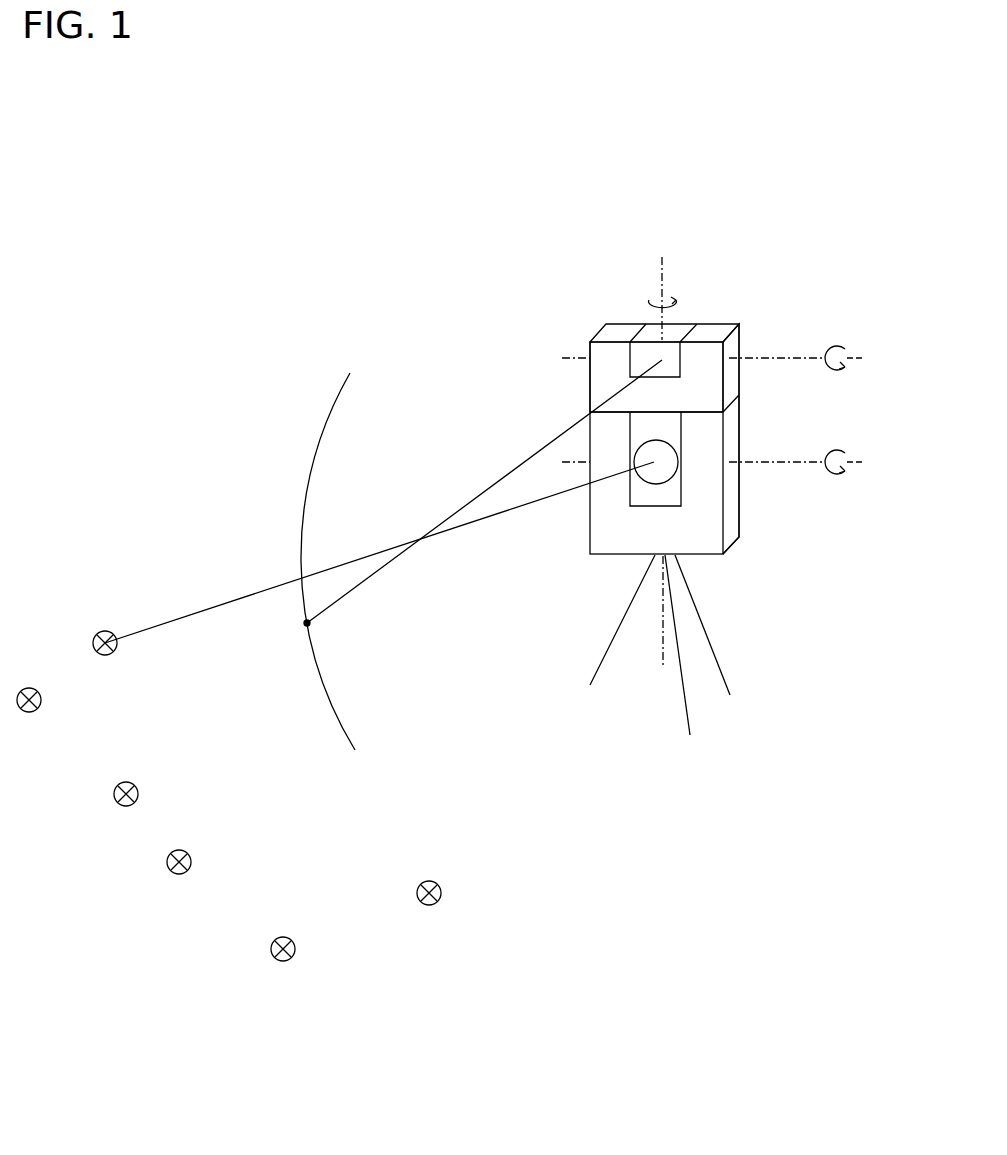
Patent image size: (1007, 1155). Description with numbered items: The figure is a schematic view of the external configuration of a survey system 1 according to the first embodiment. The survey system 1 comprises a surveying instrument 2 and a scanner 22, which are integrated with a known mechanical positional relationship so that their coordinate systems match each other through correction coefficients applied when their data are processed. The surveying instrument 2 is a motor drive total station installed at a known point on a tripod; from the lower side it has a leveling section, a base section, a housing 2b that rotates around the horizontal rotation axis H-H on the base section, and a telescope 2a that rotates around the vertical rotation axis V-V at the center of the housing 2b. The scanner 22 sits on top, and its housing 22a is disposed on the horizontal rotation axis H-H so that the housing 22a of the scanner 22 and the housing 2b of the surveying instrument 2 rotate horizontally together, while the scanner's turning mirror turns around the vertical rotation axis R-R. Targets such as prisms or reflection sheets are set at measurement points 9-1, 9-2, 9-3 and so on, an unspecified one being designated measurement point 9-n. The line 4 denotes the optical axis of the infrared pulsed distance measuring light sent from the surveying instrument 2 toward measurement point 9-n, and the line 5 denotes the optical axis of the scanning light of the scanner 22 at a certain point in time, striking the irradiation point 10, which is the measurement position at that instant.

The survey system 1 is at (597, 278).
The surveying instrument 2 is at (742, 562).
The telescope 2a is at (673, 443).
The housing 2b is at (738, 508).
The scanner 22 is at (716, 323).
The housing 22a is at (673, 362).
The optical axis of the distance measuring light 4 is at (507, 512).
The optical axis of the scanning light 5 is at (466, 502).
The irradiation point 10 is at (305, 623).
The measurement point 9-n is at (107, 632).
The measurement point 9-1 is at (433, 882).
The measurement point 9-2 is at (288, 940).
The measurement point 9-3 is at (183, 852).